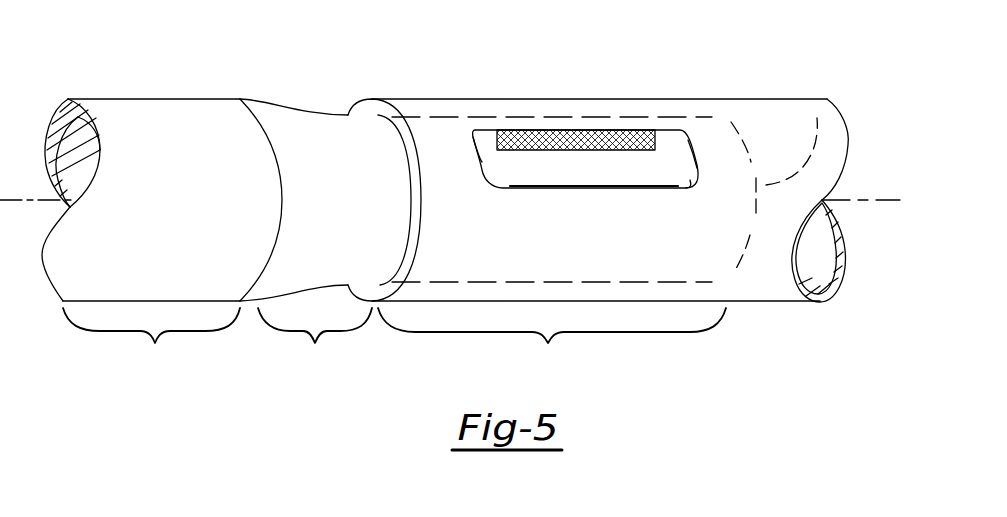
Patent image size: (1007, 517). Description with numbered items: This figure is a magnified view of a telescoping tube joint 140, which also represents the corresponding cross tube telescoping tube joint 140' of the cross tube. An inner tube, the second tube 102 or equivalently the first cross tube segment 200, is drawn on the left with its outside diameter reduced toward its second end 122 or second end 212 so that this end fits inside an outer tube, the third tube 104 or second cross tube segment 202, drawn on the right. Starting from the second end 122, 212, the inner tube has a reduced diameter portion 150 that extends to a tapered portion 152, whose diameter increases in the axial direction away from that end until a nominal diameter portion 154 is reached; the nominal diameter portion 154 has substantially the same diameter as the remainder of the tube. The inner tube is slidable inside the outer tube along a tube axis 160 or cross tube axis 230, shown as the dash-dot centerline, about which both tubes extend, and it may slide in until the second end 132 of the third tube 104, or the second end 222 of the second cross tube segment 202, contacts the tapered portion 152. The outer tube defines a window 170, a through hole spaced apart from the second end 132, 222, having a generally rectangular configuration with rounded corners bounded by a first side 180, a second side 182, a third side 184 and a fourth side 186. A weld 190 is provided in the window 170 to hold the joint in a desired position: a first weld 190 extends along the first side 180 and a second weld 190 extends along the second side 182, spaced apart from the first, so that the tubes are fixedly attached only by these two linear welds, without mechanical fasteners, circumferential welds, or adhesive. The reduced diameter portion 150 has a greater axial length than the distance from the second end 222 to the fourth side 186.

The second tube 102 is at (162, 158).
The first cross tube segment 200 is at (98, 99).
The telescoping tube joint 140 is at (282, 158).
The cross tube telescoping tube joint 140' is at (294, 200).
The second end of the third tube 132 is at (374, 159).
The second end of the second cross tube segment 222 is at (370, 98).
The third tube 104 is at (610, 236).
The second cross tube segment 202 is at (736, 302).
The second end of the second tube 122 is at (623, 149).
The second end of the first cross tube segment 212 is at (817, 118).
The tube axis 160 is at (850, 271).
The cross tube axis 230 is at (882, 203).
The window 170 is at (532, 152).
The first side 180 is at (664, 147).
The weld 190 is at (607, 135).
The third side 184 is at (487, 163).
The fourth side 186 is at (680, 160).
The second side 182 is at (692, 181).
The nominal diameter portion 154 is at (151, 341).
The tapered portion 152 is at (315, 341).
The reduced diameter portion 150 is at (552, 341).